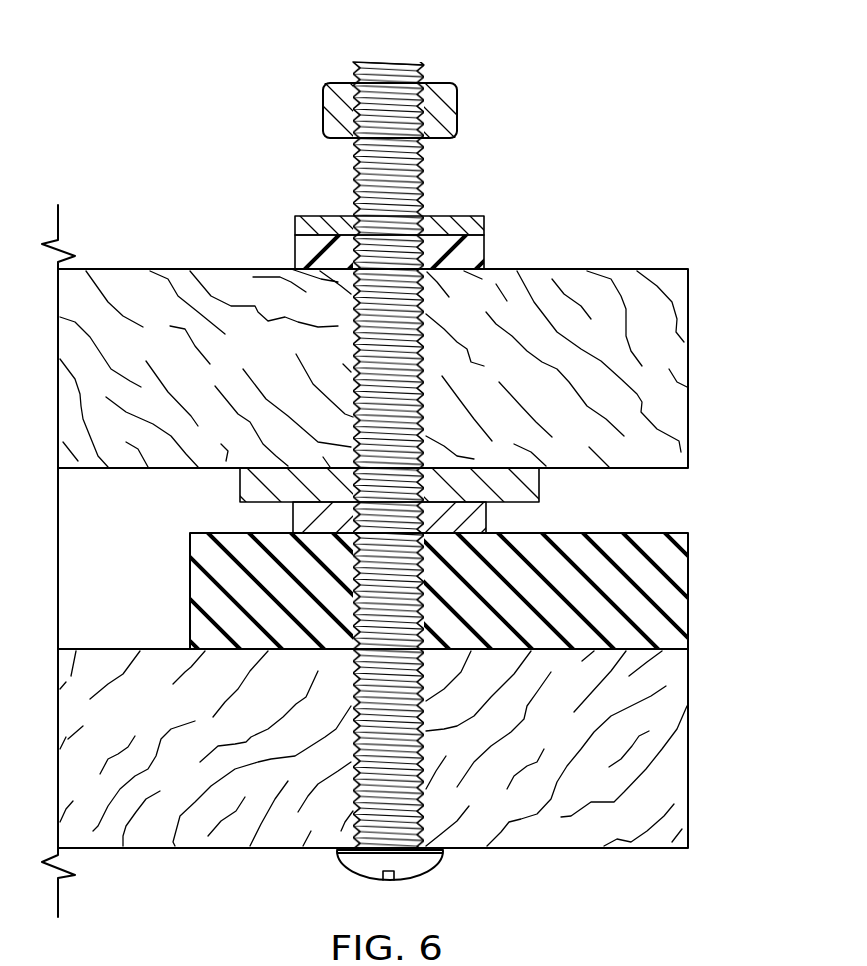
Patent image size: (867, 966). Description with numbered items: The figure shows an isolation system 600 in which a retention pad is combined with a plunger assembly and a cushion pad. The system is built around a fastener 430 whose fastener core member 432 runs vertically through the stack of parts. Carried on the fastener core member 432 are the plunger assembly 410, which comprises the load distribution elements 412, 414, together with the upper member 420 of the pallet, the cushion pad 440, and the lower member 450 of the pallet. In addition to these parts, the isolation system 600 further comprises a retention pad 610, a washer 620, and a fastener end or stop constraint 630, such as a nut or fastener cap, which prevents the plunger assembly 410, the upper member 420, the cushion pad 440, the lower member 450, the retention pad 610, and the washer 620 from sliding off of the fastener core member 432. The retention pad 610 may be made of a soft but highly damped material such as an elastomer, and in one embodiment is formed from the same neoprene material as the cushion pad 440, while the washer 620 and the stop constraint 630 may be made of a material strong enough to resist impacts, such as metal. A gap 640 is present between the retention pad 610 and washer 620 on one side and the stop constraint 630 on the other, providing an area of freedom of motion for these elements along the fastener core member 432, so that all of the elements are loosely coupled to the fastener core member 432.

The isolation system 600 is at (411, 460).
The plunger assembly 410 is at (364, 539).
The load distribution element 412 is at (293, 516).
The load distribution element 414 is at (539, 487).
The upper member of the pallet 420 is at (688, 370).
The fastener 430 is at (462, 441).
The fastener core member 432 is at (427, 317).
The cushion pad 440 is at (688, 572).
The lower member of the pallet 450 is at (688, 748).
The retention pad 610 is at (295, 252).
The washer 620 is at (484, 225).
The stop constraint 630 is at (457, 111).
The gap 640 is at (330, 148).